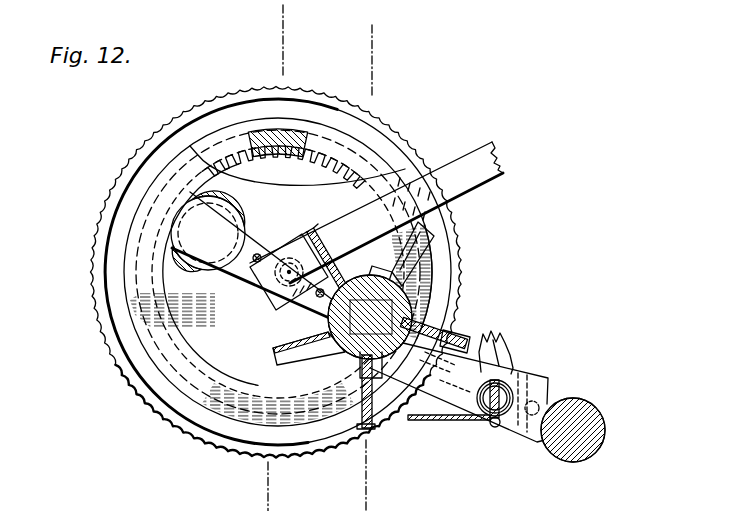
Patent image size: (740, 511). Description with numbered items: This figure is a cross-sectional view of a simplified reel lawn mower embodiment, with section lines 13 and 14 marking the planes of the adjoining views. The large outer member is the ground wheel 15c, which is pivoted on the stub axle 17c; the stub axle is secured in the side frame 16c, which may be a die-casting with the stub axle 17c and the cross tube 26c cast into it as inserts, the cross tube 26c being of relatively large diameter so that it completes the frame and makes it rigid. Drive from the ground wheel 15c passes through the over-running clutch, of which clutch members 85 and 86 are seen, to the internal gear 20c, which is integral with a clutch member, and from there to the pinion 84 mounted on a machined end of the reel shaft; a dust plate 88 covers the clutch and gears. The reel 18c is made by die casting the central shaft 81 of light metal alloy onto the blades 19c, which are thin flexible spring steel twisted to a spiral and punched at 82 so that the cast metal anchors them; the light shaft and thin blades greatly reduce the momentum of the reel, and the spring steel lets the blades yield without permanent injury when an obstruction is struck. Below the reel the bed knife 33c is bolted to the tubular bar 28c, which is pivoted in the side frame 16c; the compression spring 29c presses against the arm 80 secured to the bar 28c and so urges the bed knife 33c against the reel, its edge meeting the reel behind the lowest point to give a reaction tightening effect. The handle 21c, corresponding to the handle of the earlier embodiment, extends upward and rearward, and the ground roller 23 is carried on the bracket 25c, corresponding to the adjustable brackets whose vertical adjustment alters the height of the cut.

The section line 13- 13 is at (378, 55).
The section line 14- 14 is at (262, 33).
The ground wheels 15c is at (403, 134).
The over-running clutch member 85 is at (382, 116).
The pinions 84 is at (432, 293).
The internal gear 20c is at (328, 156).
The over-running clutch member 86 is at (286, 132).
The dust plates 88 is at (235, 183).
The arm 21c is at (478, 152).
The cross tube 26c is at (188, 278).
The side frame 16c is at (268, 238).
The punched portions of blades 82 is at (296, 313).
The stub axles 17c is at (250, 286).
The reel 18c is at (357, 262).
The blades 19c is at (272, 354).
The central shaft 81 is at (330, 348).
The lever bar 25c is at (550, 388).
The bed knife 33c is at (440, 421).
The arm 80 is at (482, 394).
The tubular bar 28c is at (499, 382).
The compression spring 29c is at (482, 333).
The ground roller 23 is at (600, 418).